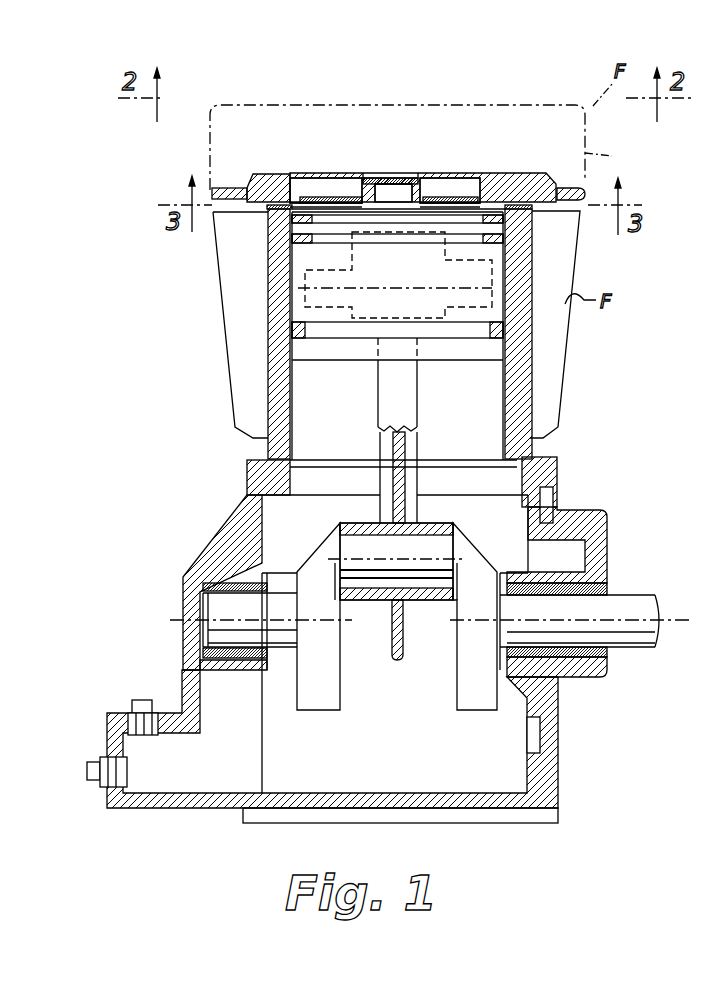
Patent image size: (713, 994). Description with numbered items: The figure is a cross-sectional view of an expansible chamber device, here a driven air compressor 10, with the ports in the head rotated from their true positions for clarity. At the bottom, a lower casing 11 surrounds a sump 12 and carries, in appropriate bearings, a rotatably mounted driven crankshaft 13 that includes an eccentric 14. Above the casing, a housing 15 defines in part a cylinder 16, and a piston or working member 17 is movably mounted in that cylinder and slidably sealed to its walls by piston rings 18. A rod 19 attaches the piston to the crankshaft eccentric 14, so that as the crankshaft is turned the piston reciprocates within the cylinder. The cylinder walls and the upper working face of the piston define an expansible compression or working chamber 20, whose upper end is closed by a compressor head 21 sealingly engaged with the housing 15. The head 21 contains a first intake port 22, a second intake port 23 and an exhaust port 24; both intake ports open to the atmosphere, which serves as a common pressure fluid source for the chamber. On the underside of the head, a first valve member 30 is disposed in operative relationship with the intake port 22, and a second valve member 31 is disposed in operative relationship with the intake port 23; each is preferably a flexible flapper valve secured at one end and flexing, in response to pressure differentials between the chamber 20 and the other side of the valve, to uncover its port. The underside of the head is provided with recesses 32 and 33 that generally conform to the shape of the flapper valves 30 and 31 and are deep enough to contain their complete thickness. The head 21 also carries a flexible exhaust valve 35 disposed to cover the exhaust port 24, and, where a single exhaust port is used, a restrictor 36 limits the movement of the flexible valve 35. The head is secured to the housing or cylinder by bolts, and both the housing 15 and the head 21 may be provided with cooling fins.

The driven air compressor 10 is at (162, 492).
The lower casing 11 is at (244, 545).
The sump 12 is at (316, 778).
The driven crankshaft 13 is at (645, 610).
The eccentric 14 is at (440, 551).
The housing 15 is at (266, 345).
The cylinder 16 is at (298, 374).
The piston 17 is at (294, 288).
The piston rings 18 is at (287, 223).
The rod 19 is at (406, 402).
The expansible compression chamber 20 is at (481, 197).
The compressor head 21 is at (553, 177).
The first intake port 22 is at (448, 190).
The second intake port 23 is at (320, 190).
The exhaust port 24 is at (398, 205).
The first valve member 30 is at (460, 196).
The second valve member 31 is at (340, 196).
The recess 32 is at (478, 203).
The recess 33 is at (273, 187).
The flexible exhaust valve 35 is at (385, 192).
The restrictor 36 is at (380, 178).